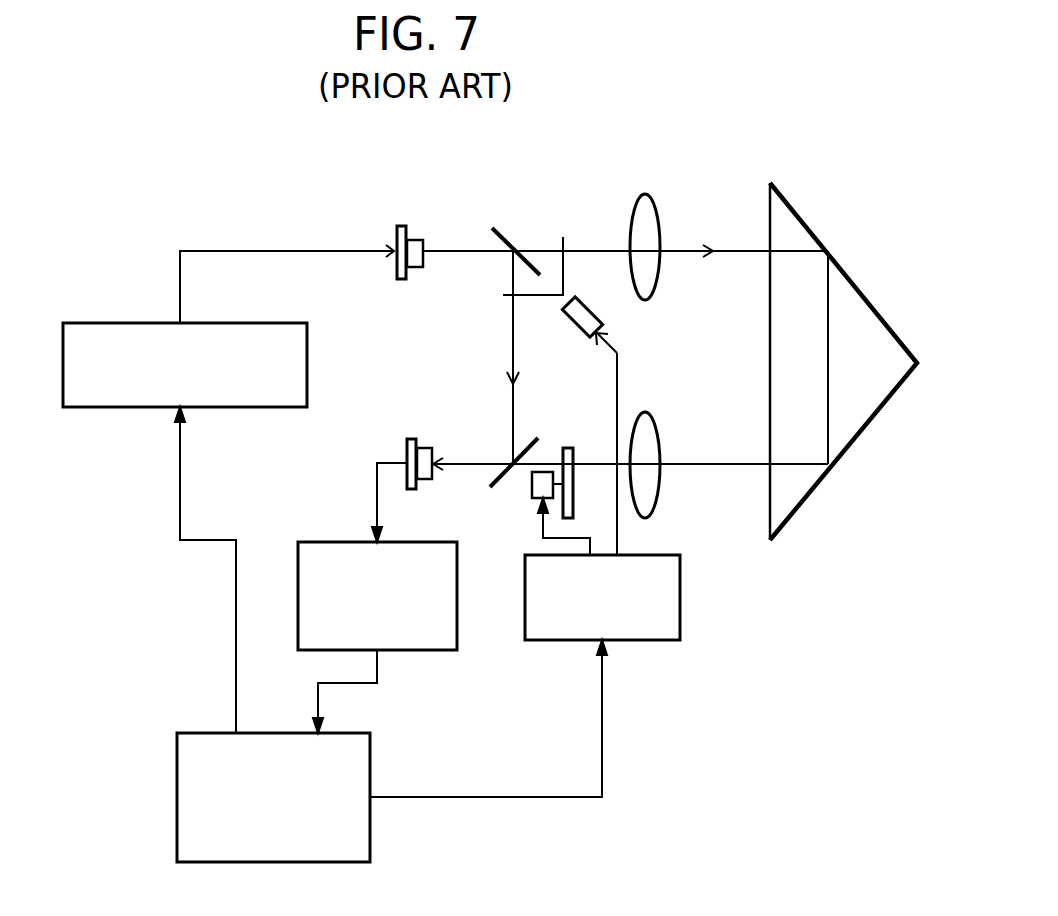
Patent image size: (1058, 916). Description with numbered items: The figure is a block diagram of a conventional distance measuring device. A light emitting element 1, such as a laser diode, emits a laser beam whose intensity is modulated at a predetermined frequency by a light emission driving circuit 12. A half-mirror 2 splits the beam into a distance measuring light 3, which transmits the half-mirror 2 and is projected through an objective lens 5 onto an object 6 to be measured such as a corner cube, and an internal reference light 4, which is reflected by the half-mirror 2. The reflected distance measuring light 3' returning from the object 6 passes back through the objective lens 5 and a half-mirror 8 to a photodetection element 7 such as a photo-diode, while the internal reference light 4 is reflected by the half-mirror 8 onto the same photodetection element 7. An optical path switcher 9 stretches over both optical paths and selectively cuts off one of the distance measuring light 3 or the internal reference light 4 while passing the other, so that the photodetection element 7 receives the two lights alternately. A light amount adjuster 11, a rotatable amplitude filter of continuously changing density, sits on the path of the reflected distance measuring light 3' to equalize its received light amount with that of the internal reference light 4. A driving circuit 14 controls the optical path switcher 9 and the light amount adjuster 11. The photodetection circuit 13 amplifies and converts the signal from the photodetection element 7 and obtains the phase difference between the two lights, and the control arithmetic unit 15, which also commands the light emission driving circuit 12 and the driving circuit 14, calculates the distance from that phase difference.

The light emitting element 1 is at (410, 237).
The half-mirror 2 is at (510, 243).
The distance measuring light 3 is at (625, 298).
The reflected distance measuring light 3' is at (630, 421).
The internal reference light 4 is at (513, 331).
The objective lens 5 is at (657, 227).
The object to be measured 6 is at (817, 237).
The photodetection element 7 is at (427, 447).
The half-mirror 8 is at (520, 447).
The optical path switcher 9 is at (587, 307).
The light amount adjuster 11 is at (573, 460).
The light emission driving circuit 12 is at (102, 322).
The photodetection circuit 13 is at (317, 542).
The driving circuit 14 is at (662, 642).
The control arithmetic unit 15 is at (372, 775).